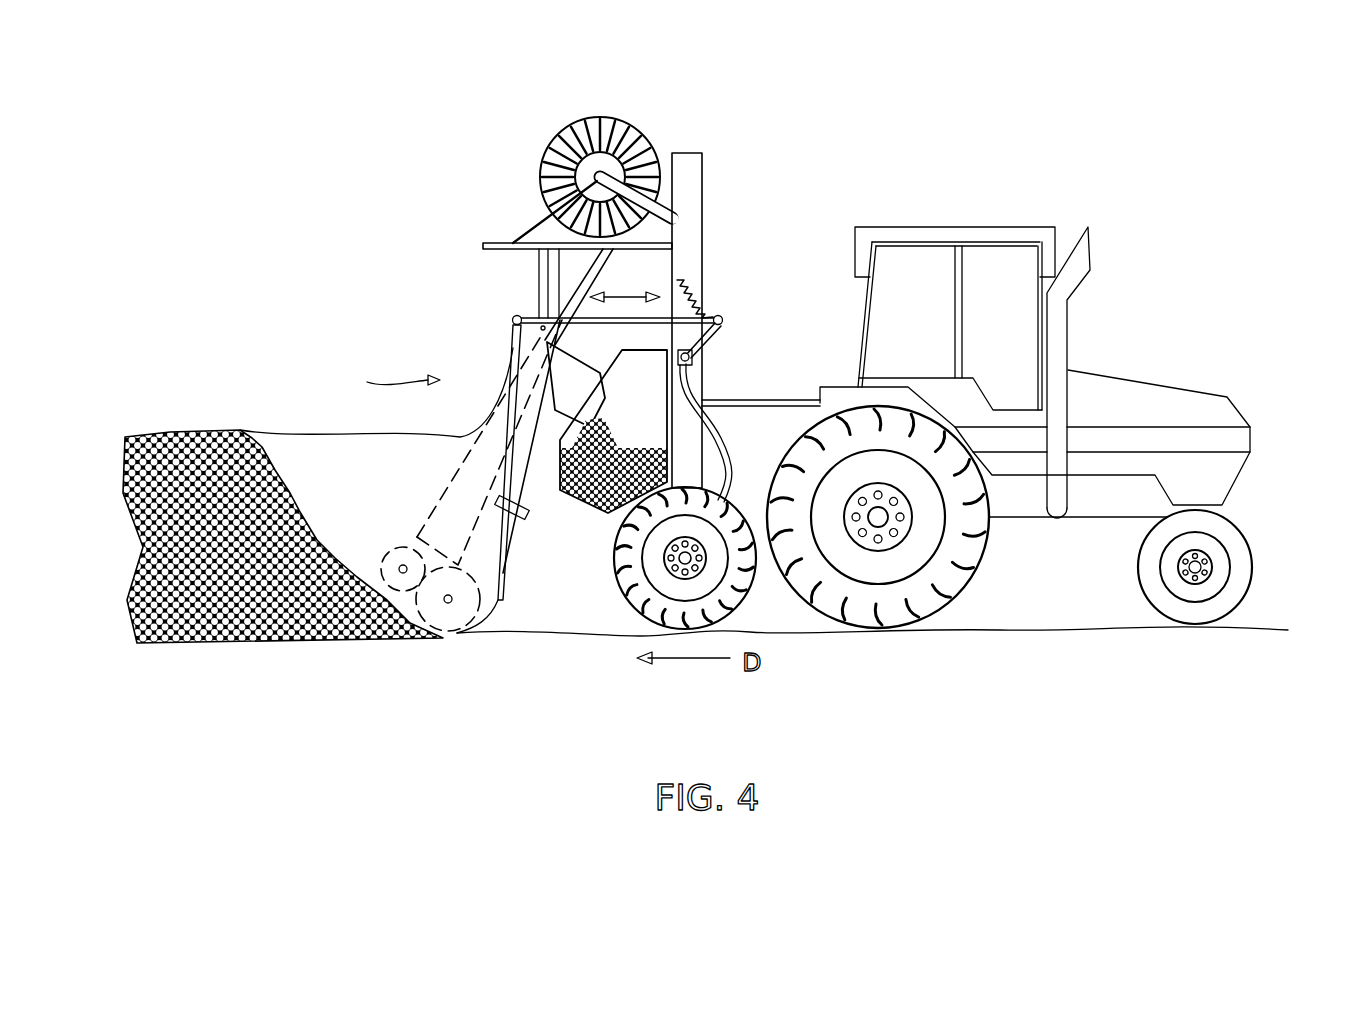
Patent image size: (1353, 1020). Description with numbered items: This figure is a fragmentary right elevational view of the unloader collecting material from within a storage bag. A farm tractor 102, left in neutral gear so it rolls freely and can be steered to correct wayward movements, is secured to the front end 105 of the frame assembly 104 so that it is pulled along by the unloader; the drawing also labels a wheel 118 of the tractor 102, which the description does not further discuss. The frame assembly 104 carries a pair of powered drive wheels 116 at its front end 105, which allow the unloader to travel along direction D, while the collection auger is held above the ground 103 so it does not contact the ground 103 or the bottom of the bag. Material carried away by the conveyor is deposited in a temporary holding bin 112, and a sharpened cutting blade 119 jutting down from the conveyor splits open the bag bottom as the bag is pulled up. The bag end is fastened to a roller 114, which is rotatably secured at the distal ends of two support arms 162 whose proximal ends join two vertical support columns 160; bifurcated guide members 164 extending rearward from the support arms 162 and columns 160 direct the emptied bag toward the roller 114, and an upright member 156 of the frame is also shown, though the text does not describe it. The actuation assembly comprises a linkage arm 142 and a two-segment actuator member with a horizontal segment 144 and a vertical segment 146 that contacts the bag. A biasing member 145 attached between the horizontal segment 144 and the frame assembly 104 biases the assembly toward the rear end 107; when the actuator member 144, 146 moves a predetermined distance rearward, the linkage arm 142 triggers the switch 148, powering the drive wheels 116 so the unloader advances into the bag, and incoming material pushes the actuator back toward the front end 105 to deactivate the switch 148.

The farm tractor 102 is at (981, 227).
The ground 103 is at (288, 692).
The frame assembly 104 is at (496, 148).
The front end 105 is at (775, 383).
The rear end 107 is at (379, 377).
The temporary holding bin 112 is at (587, 513).
The roller 114 is at (628, 124).
The powered drive wheels 116 is at (640, 593).
The tractor rear wheel 118 is at (858, 622).
The sharpened cutting blade 119 is at (533, 528).
The linkage arm 142 is at (713, 335).
The horizontal segment of actuator member 144 is at (533, 318).
The biasing member 145 is at (697, 289).
The vertical segment of actuator member 146 is at (503, 465).
The switch 148 is at (700, 372).
The upright post 156 is at (543, 270).
The vertical support columns 160 is at (700, 152).
The support arms 162 is at (667, 222).
The bifurcated guide members 164 is at (525, 235).